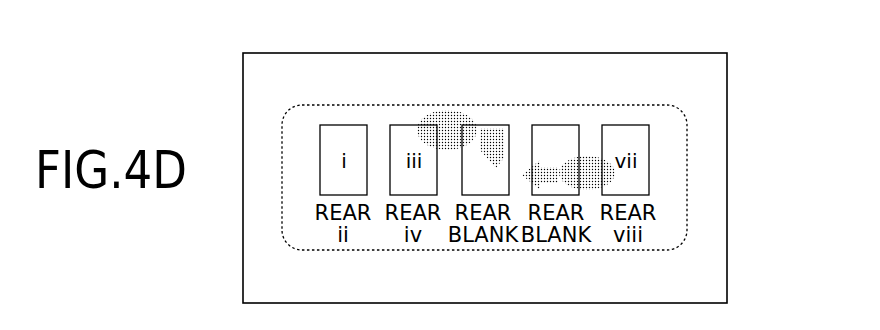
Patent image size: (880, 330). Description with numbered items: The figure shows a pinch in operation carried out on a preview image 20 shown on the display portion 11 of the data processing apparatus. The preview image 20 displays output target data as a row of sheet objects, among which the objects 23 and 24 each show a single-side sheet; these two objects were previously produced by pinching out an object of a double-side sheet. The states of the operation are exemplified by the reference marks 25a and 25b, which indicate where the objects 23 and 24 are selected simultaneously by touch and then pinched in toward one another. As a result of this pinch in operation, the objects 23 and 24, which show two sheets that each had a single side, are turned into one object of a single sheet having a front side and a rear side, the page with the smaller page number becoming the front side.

The display portion 11 is at (727, 128).
The preview image 20 is at (652, 105).
The object 23 is at (496, 124).
The object 24 is at (557, 124).
The state of an operation 25a is at (437, 114).
The state of an operation 25b is at (592, 193).